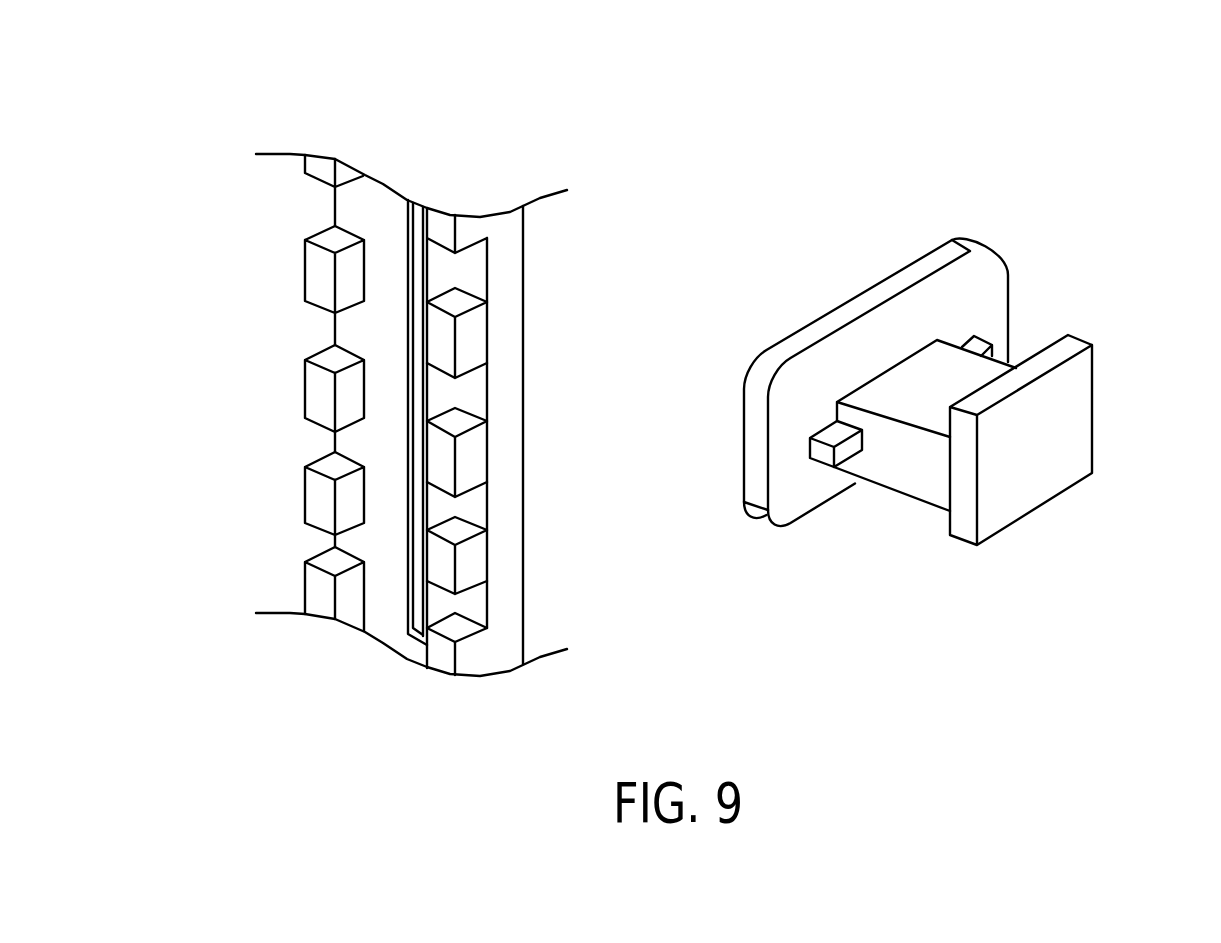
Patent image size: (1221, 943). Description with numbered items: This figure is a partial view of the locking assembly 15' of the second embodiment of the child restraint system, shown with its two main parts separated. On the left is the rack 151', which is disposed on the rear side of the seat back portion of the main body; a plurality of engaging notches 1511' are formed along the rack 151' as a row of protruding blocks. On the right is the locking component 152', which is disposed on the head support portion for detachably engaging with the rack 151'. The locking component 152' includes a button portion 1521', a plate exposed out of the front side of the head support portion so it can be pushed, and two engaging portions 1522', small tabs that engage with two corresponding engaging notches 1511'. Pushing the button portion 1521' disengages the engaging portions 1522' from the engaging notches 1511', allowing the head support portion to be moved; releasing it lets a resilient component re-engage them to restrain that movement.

The locking assembly 15' is at (668, 347).
The rack 151' is at (374, 382).
The engaging notches 1511' is at (262, 393).
The locking component 152' is at (959, 354).
The button portion 1521' is at (1062, 438).
The engaging portions 1522' is at (957, 417).